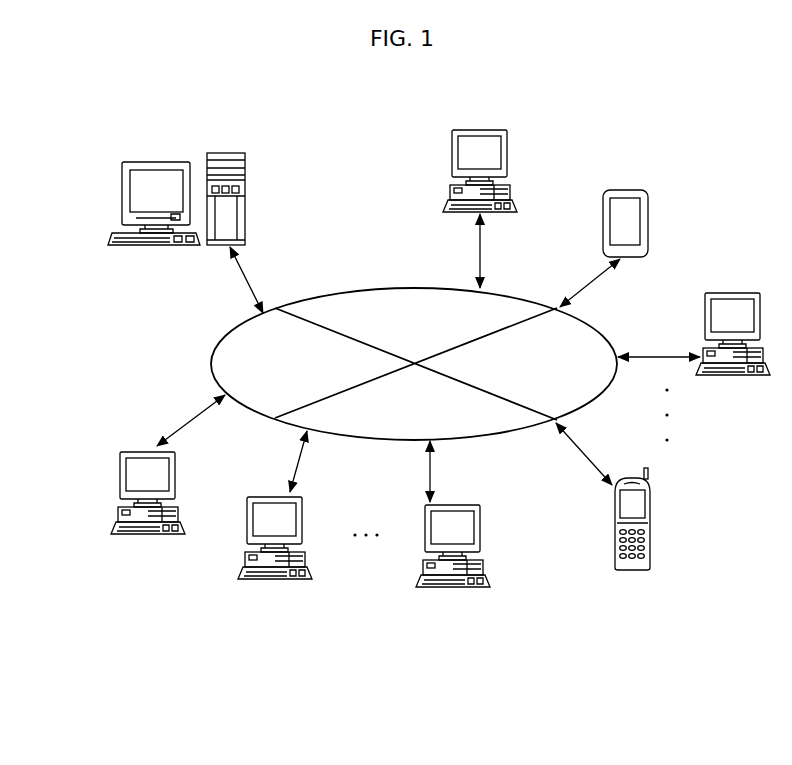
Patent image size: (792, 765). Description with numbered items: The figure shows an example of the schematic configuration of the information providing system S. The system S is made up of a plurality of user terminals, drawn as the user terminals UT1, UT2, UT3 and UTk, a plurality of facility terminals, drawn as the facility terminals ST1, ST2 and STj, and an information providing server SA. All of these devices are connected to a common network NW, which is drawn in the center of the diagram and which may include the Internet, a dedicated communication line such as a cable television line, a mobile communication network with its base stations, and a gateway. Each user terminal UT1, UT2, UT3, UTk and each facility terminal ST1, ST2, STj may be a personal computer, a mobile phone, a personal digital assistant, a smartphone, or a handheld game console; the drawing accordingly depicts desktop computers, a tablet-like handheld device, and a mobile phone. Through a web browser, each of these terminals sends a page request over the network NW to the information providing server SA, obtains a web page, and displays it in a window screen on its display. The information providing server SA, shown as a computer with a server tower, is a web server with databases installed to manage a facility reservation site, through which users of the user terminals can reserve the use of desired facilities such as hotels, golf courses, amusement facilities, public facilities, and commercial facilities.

The information providing system S is at (377, 694).
The network NW is at (400, 287).
The information providing server SA is at (221, 153).
The user terminal UT1 is at (450, 191).
The user terminal UT2 is at (603, 238).
The user terminal UT3 is at (705, 340).
The user terminal UTk is at (651, 497).
The facility terminal ST1 is at (185, 523).
The facility terminal ST2 is at (312, 568).
The facility terminal STj is at (489, 577).